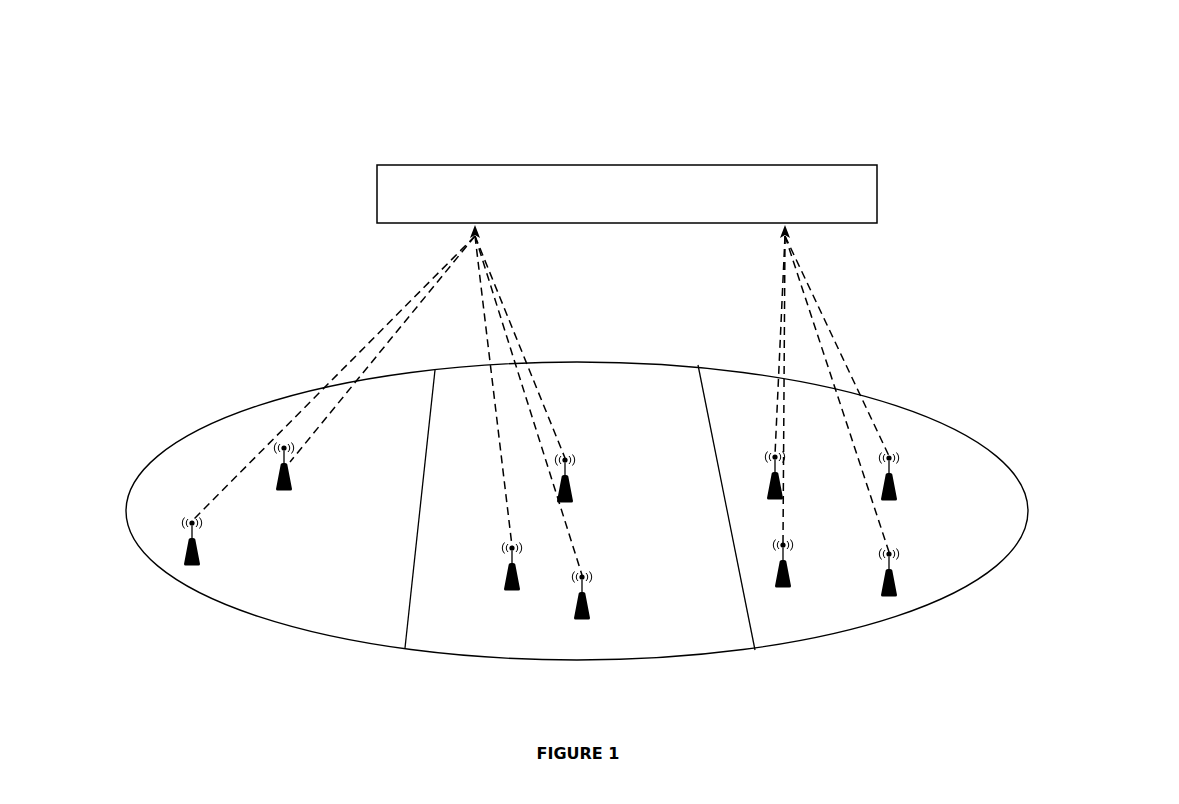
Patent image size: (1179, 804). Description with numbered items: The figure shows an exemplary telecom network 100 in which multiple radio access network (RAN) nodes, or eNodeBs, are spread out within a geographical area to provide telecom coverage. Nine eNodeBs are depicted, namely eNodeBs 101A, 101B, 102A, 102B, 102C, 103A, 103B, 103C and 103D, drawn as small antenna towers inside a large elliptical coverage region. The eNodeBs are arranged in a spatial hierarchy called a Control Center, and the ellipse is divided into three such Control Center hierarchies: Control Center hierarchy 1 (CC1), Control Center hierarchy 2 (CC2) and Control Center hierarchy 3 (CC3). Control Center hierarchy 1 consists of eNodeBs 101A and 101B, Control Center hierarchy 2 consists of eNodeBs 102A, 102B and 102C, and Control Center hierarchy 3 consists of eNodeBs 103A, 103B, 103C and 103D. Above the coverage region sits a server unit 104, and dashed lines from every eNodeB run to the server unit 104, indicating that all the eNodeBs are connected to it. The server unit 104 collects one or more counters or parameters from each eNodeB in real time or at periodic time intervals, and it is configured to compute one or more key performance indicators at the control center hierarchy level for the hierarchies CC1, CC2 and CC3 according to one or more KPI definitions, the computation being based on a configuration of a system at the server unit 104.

The communication system 100 is at (1082, 68).
The server unit 104 is at (627, 194).
The radio access network node (eNodeB) 101A is at (294, 488).
The radio access network node (eNodeB) 101B is at (201, 562).
The radio access network node (eNodeB) 102A is at (576, 487).
The radio access network node (eNodeB) 102B is at (521, 551).
The radio access network node (eNodeB) 102C is at (591, 603).
The radio access network node (eNodeB) 103A is at (784, 480).
The radio access network node (eNodeB) 103B is at (898, 484).
The radio access network node (eNodeB) 103C is at (792, 565).
The radio access network node (eNodeB) 103D is at (898, 580).
The Control Center hierarchy CC1 1 is at (390, 509).
The Control Center hierarchy CC2 2 is at (649, 509).
The Control Center hierarchy CC3 3 is at (808, 620).